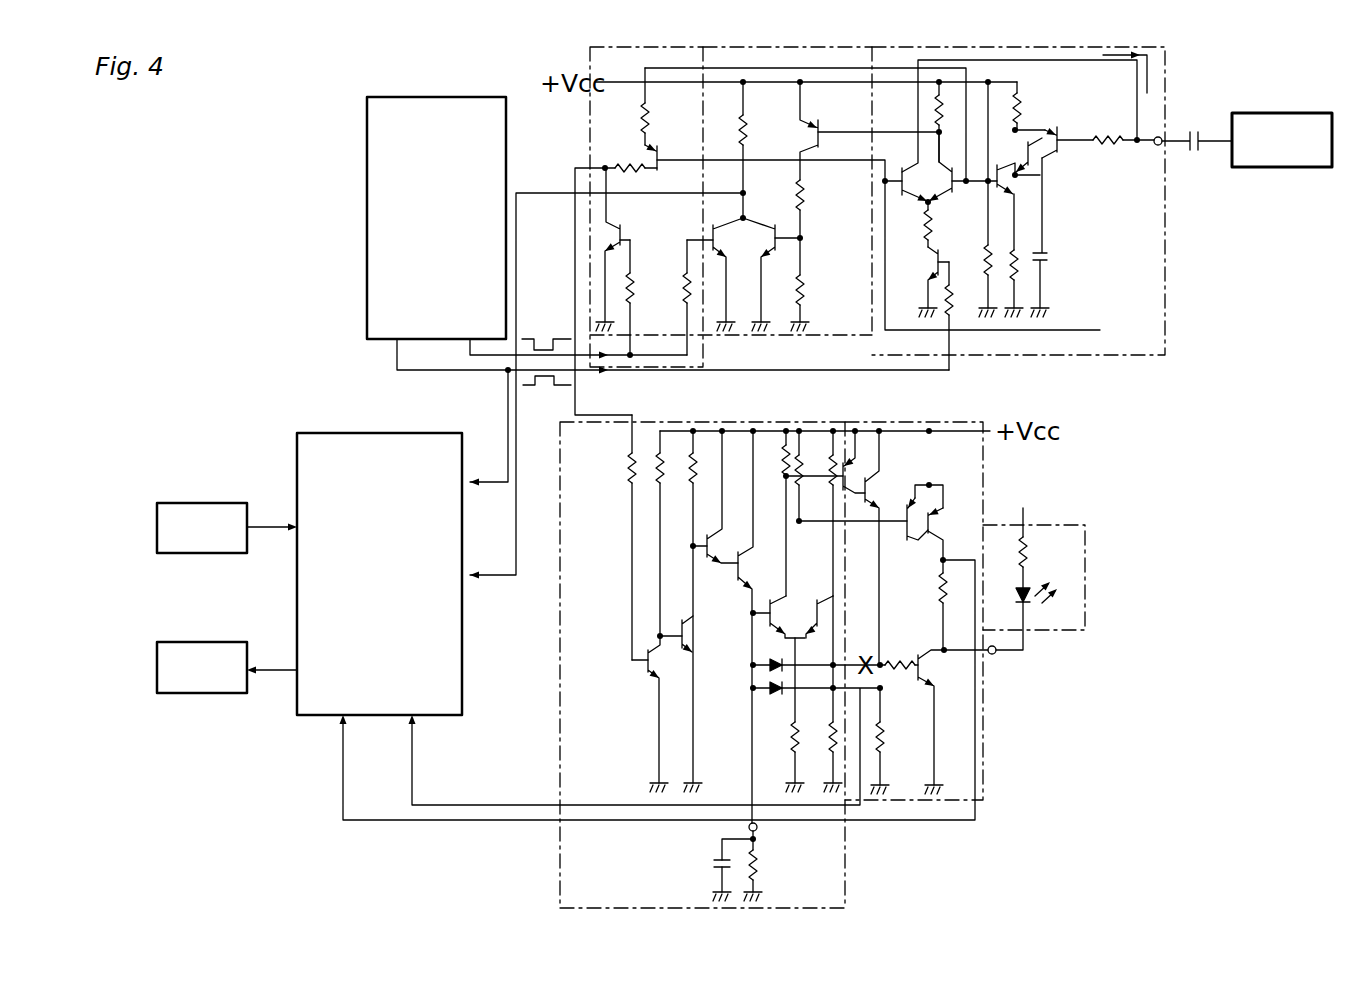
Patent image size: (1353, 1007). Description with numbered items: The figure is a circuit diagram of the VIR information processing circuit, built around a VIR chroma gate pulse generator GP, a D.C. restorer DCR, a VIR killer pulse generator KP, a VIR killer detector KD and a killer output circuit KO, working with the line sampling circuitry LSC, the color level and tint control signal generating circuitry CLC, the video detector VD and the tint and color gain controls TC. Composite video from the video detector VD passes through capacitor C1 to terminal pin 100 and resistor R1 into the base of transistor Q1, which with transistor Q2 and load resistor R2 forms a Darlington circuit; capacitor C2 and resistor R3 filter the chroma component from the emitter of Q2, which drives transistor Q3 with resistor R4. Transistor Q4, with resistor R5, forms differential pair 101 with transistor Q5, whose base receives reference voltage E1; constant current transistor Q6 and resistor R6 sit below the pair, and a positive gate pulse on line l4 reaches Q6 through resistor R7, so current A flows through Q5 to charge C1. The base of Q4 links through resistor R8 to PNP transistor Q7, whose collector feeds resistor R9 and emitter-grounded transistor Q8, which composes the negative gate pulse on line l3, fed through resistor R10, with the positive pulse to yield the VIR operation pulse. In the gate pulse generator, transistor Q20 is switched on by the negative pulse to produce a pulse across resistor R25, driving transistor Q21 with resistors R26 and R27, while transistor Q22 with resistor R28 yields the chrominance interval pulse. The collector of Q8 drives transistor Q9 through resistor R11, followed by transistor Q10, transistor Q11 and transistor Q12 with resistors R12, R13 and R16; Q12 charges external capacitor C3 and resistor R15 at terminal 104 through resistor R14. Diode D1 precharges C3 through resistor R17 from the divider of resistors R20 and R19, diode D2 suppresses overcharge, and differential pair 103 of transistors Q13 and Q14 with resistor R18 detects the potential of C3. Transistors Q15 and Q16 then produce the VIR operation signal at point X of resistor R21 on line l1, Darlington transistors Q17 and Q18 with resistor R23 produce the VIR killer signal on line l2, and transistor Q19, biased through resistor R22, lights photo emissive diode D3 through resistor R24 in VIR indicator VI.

The VIR killer pulse generator KP is at (642, 47).
The VIR chroma gate pulse generator GP is at (808, 47).
The D.C. restorer DCR is at (1165, 316).
The VIR killer detector KD is at (566, 662).
The killer output circuit KO is at (983, 712).
The VIR indicator VI is at (1085, 612).
The line sampling circuitry LSC is at (423, 100).
The automatic color level control signal generating circuitry CLC is at (440, 700).
The video detector VD is at (200, 503).
The tint and color control TC is at (166, 697).
The resistor R1 is at (1108, 136).
The resistor R2 is at (1020, 122).
The resistor R3 is at (1018, 272).
The resistor R4 is at (992, 262).
The resistor R5 is at (935, 112).
The resistor R6 is at (924, 228).
The resistor R7 is at (952, 300).
The resistor R8 is at (629, 106).
The resistor R9 is at (622, 166).
The resistor R10 is at (633, 290).
The resistor R11 is at (626, 466).
The resistor R12 is at (658, 450).
The resistor R13 is at (694, 450).
The resistor R14 is at (751, 616).
The resistor R15 is at (757, 858).
The resistor R16 is at (782, 455).
The resistor R17 is at (802, 456).
The resistor R18 is at (790, 738).
The resistor R19 is at (829, 738).
The resistor R20 is at (830, 456).
The resistor R21 is at (884, 736).
The resistor R22 is at (900, 660).
The resistor R23 is at (918, 605).
The resistor R24 is at (1032, 548).
The resistor R25 is at (804, 199).
The resistor R26 is at (804, 298).
The resistor R27 is at (744, 128).
The resistor R28 is at (683, 290).
The transistor Q1 is at (1053, 118).
The transistor Q2 is at (1030, 160).
The transistor Q3 is at (1002, 180).
The first transistor Q4 is at (951, 189).
The second transistor Q5 is at (907, 200).
The constant current transistor Q6 is at (936, 274).
The PNP type transistor Q7 is at (670, 148).
The emitter-grounded transistor Q8 is at (622, 245).
The transistor Q9 is at (645, 662).
The emitter-grounded transistor Q10 is at (658, 636).
The transistor Q11 is at (705, 540).
The transistor Q12 is at (768, 614).
The transistor Q13 is at (770, 627).
The transistor Q14 is at (846, 610).
The transistor Q15 is at (850, 470).
The transistor Q16 is at (870, 482).
The transistor Q17 is at (913, 531).
The transistor Q18 is at (935, 525).
The transistor Q19 is at (931, 717).
The transistor Q20 is at (830, 131).
The transistor Q21 is at (774, 230).
The transistor Q22 is at (712, 230).
The capacitor C1 is at (1195, 150).
The capacitor C2 is at (1049, 257).
The capacitor C3 is at (715, 862).
The diode D1 is at (768, 664).
The diode D2 is at (768, 690).
The photo emissive diode D3 is at (1022, 591).
The terminal pin 100 is at (1160, 147).
The differential pair 101 is at (914, 166).
The differential pair 103 is at (806, 606).
The terminal 104 is at (760, 830).
The constant reference voltage E1 is at (1119, 337).
The current A is at (900, 121).
The one end of resistor R21 X is at (880, 665).
The line l1 is at (525, 795).
The line l2 is at (520, 837).
The line l3 is at (657, 351).
The line l4 is at (732, 367).